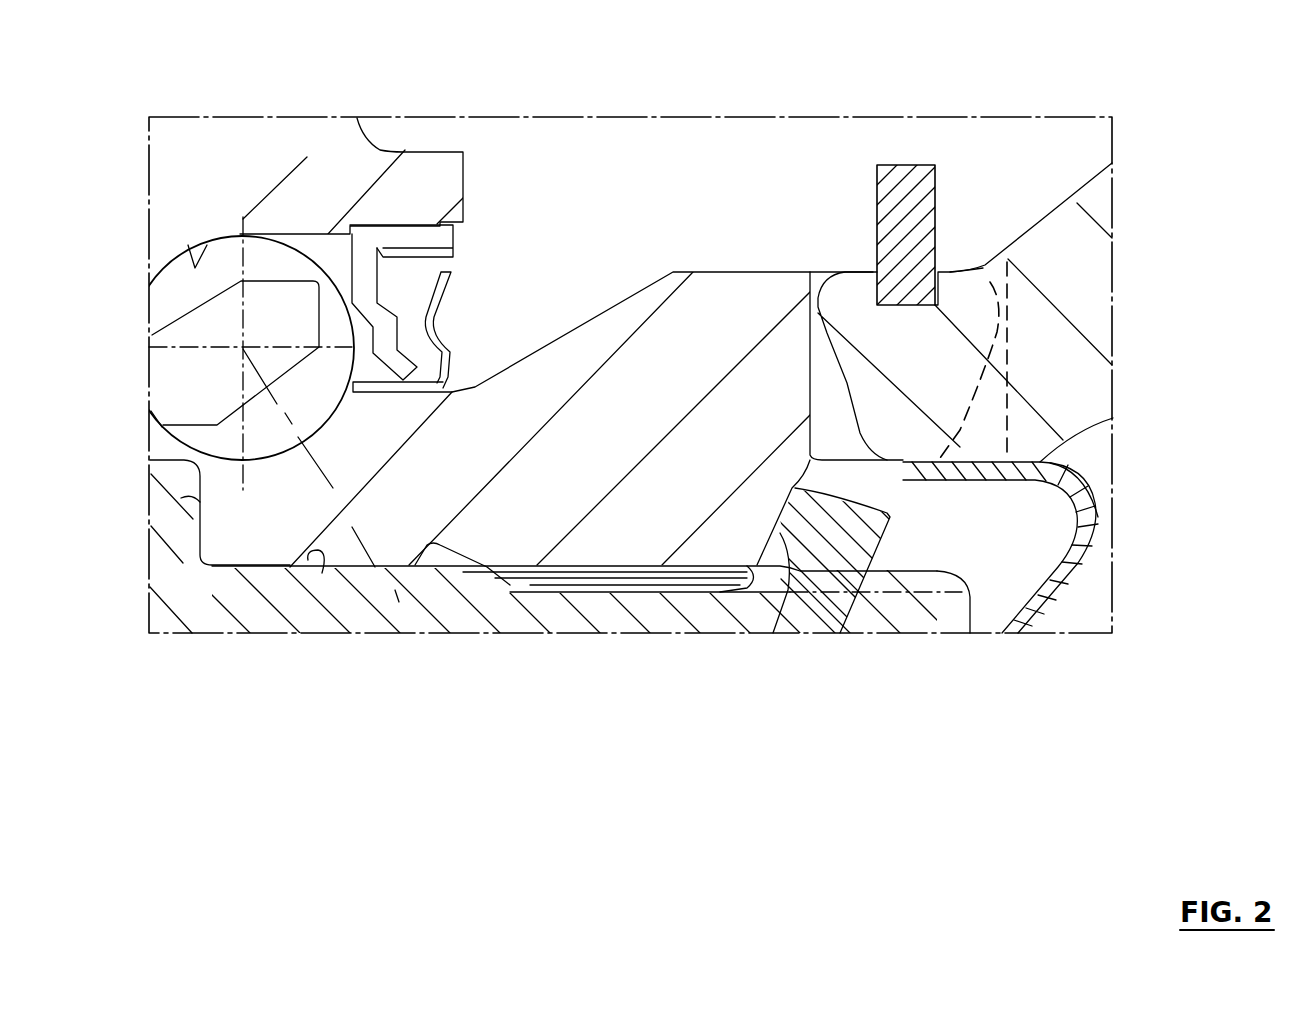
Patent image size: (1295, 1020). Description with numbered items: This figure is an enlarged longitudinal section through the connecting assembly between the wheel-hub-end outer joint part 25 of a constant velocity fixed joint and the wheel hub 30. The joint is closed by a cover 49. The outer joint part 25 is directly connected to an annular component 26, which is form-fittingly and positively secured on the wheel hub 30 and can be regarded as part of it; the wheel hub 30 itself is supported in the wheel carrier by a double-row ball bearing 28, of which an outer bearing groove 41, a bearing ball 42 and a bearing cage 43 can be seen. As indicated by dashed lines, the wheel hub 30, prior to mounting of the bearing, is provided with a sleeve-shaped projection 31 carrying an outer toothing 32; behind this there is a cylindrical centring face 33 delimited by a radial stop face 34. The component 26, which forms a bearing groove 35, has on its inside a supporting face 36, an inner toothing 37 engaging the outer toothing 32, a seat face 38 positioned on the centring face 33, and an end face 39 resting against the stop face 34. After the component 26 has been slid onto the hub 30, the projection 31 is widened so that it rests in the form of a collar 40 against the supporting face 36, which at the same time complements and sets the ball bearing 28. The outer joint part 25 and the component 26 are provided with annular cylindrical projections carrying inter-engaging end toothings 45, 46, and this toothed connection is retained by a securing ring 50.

The outer joint part 25 is at (1077, 398).
The annular component 26 is at (627, 510).
The double-row ball bearing 28 is at (363, 177).
The wheel hub 30 is at (358, 612).
The sleeve-shaped projection 31 is at (915, 612).
The outer toothing 32 is at (507, 592).
The cylindrical centring face 33 is at (322, 573).
The radial stop face 34 is at (202, 533).
The bearing groove 35 is at (331, 426).
The supporting face 36 is at (790, 560).
The inner toothing 37 is at (697, 567).
The seat face 38 is at (417, 566).
The end face 39 is at (181, 498).
The collar 40 is at (827, 540).
The outer bearing groove 41 is at (195, 268).
The bearing ball 42 is at (273, 262).
The bearing cage 43 is at (220, 318).
The end toothing 45 is at (997, 265).
The end toothing 46 is at (823, 273).
The cover 49 is at (1036, 600).
The securing ring 50 is at (903, 187).